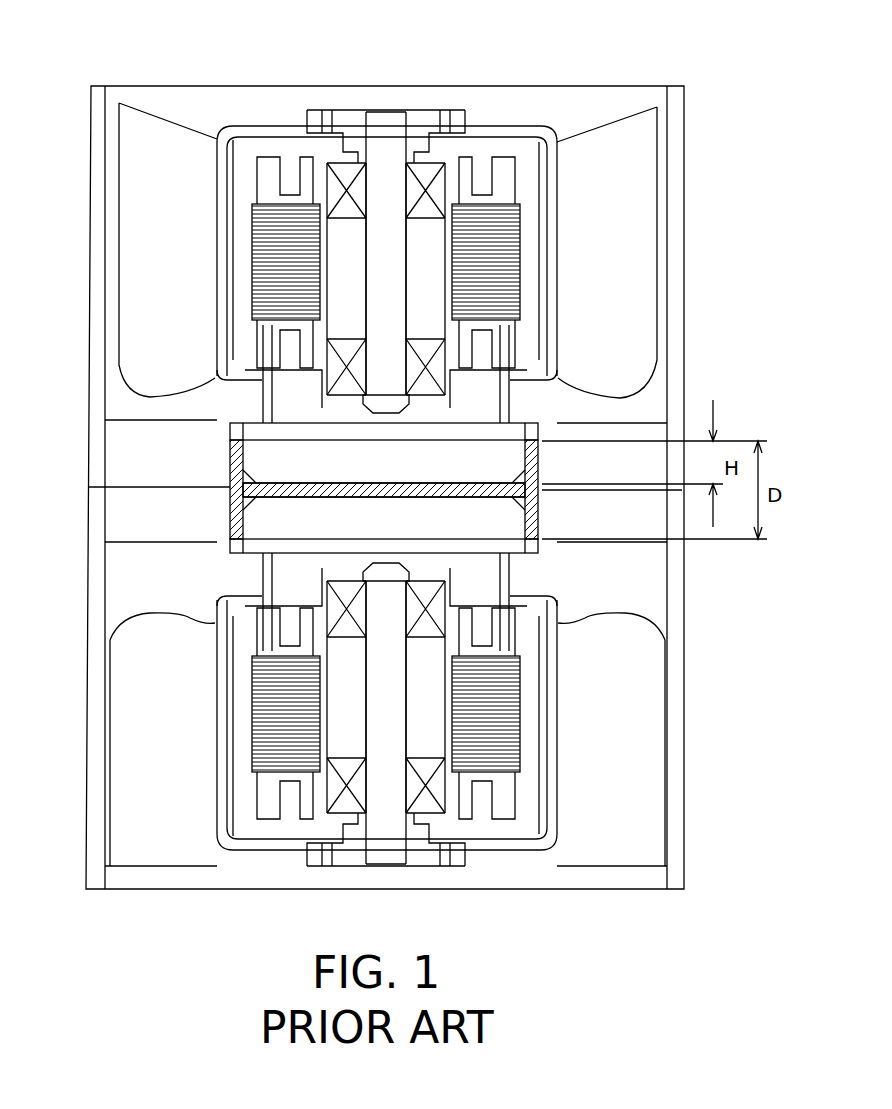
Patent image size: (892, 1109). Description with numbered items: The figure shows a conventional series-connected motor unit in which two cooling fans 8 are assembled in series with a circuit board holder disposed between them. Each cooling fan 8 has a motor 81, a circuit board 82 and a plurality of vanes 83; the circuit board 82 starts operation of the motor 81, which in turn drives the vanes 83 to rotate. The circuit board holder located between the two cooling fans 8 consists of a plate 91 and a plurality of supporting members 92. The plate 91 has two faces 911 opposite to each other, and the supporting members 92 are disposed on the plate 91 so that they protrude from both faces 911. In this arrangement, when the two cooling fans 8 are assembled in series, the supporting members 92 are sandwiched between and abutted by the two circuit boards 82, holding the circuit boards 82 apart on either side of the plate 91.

The cooling fan 8 is at (91, 195).
The motor 81 is at (236, 271).
The circuit board 82 is at (243, 431).
The vanes 83 is at (160, 130).
The plate 91 is at (247, 470).
The supporting members 92 is at (236, 447).
The faces 911 is at (467, 478).